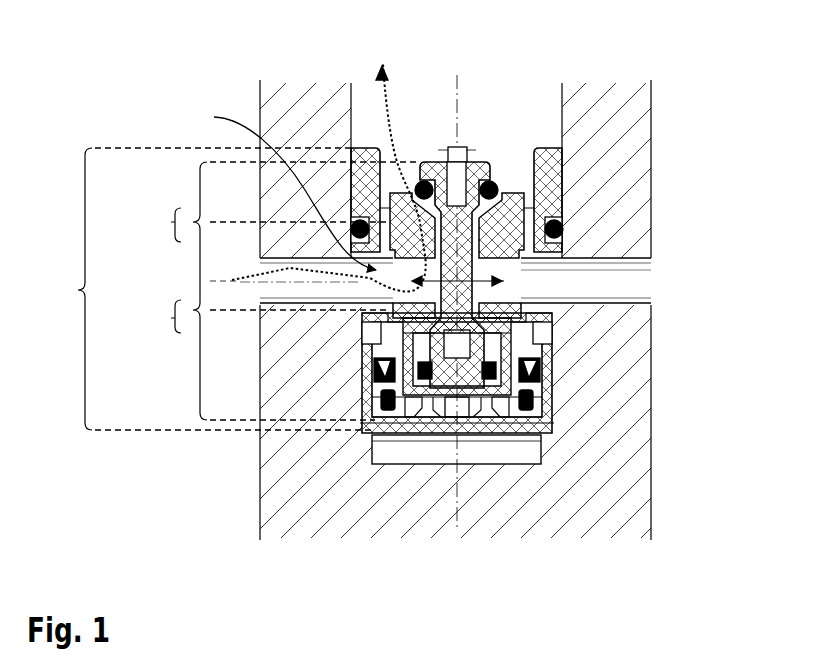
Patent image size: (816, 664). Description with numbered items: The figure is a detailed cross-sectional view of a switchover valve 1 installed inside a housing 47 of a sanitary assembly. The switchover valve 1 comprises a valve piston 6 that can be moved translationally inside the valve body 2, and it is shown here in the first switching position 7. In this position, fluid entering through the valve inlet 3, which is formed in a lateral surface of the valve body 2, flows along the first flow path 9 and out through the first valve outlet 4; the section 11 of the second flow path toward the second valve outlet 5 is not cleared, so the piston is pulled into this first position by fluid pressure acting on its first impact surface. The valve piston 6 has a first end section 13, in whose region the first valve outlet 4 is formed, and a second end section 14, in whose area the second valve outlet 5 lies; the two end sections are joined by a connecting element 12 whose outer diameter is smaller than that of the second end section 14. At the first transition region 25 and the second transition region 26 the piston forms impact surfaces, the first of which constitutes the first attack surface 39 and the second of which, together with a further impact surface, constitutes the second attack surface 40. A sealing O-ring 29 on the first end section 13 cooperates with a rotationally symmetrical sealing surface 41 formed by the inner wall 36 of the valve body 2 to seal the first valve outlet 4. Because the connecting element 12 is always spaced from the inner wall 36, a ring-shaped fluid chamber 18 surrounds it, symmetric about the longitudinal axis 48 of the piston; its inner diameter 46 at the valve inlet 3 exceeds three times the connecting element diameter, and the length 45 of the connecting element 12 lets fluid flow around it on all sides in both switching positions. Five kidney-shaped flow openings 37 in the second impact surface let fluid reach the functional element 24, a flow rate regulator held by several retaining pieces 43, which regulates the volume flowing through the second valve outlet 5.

The switchover valve 1 is at (78, 290).
The valve body 2 is at (542, 160).
The valve inlet 3 is at (293, 203).
The first valve outlet 4 is at (487, 217).
The second valve outlet 5 is at (413, 385).
The valve piston 6 is at (470, 160).
The first switching position 7 is at (431, 138).
The first flow path 9 is at (319, 157).
The section of the second flow path 11 is at (493, 482).
The connecting element 12 is at (492, 258).
The first end section 13 is at (200, 192).
The second end section 14 is at (200, 368).
The fluid chamber 18 is at (530, 300).
The functional element 24 is at (478, 406).
The first transition region 25 is at (171, 222).
The second transition region 26 is at (171, 318).
The sealing O-ring 29 is at (491, 182).
The inner wall 36 is at (505, 276).
The kidney-shaped flow openings 37 is at (415, 326).
The first attack surface 39 is at (497, 217).
The second attack surface 40 is at (534, 378).
The sealing surface 41 is at (558, 216).
The retaining pieces 43 is at (443, 417).
The length 45 is at (200, 268).
The inner diameter 46 is at (512, 290).
The housing 47 is at (285, 100).
The longitudinal axis 48 is at (457, 513).